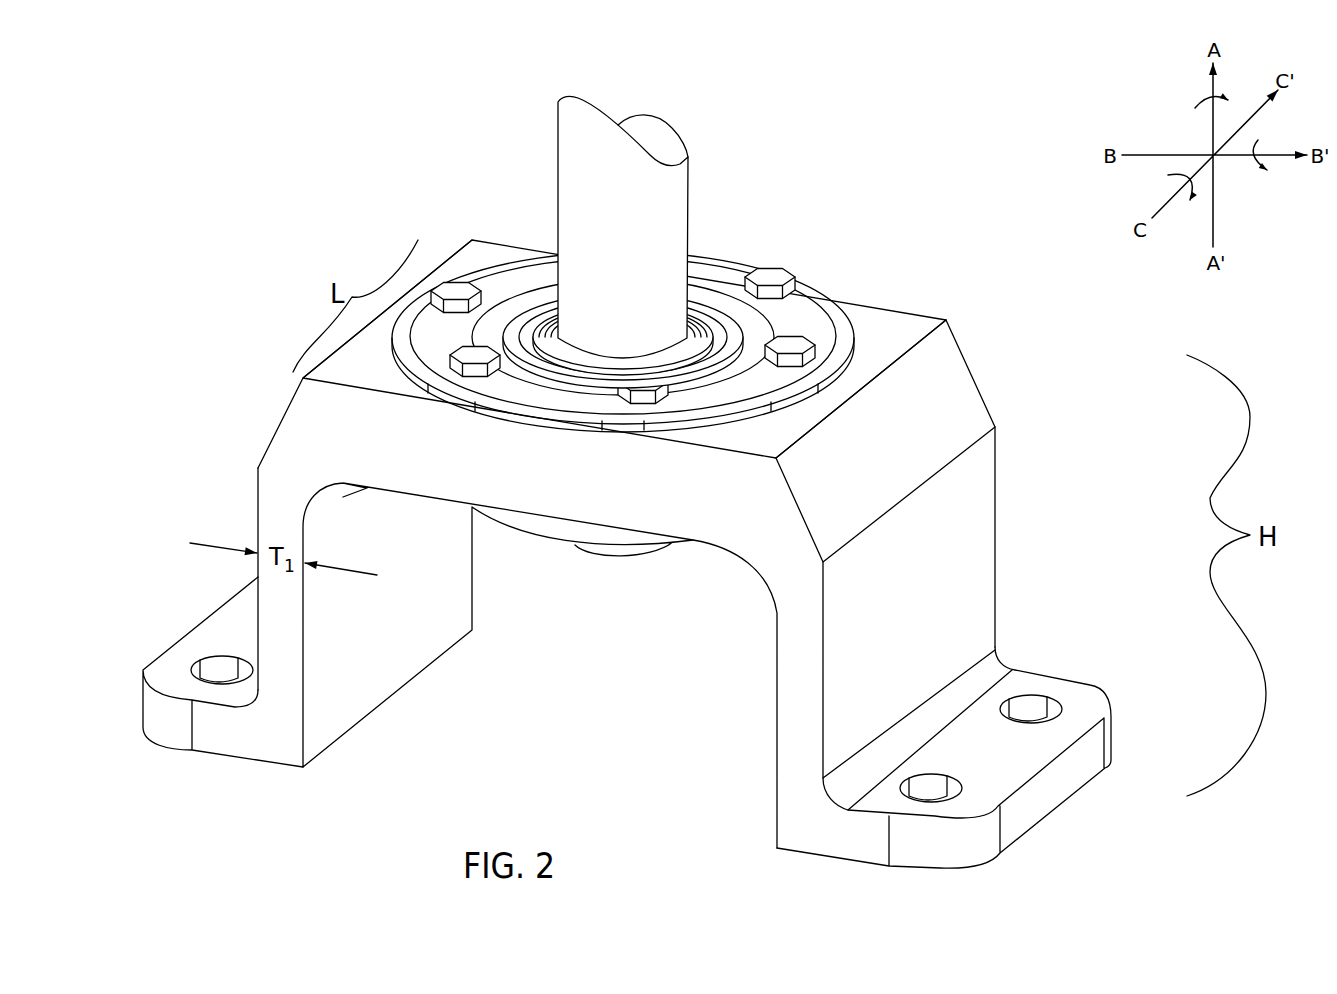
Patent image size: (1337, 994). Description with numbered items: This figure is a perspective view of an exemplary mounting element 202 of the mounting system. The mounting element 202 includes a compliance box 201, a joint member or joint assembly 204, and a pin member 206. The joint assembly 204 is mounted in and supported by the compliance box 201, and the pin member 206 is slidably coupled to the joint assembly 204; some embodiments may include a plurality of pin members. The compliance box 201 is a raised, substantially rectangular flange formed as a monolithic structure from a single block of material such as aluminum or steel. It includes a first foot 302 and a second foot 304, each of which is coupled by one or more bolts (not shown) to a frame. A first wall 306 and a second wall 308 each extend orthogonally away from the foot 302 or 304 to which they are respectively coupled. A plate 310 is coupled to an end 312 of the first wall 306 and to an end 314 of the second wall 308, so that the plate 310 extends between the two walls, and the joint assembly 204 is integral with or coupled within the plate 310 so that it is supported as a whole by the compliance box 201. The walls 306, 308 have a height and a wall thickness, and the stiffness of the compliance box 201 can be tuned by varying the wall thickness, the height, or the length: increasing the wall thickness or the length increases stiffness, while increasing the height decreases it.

The compliance box 201 is at (903, 320).
The mounting element 202 is at (786, 84).
The joint assembly 204 is at (541, 321).
The pin member 206 is at (590, 123).
The first foot 302 is at (1057, 810).
The second foot 304 is at (172, 745).
The first wall 306 is at (997, 535).
The second wall 308 is at (257, 523).
The plate 310 is at (865, 317).
The end of first wall 312 is at (940, 331).
The end of second wall 314 is at (290, 373).